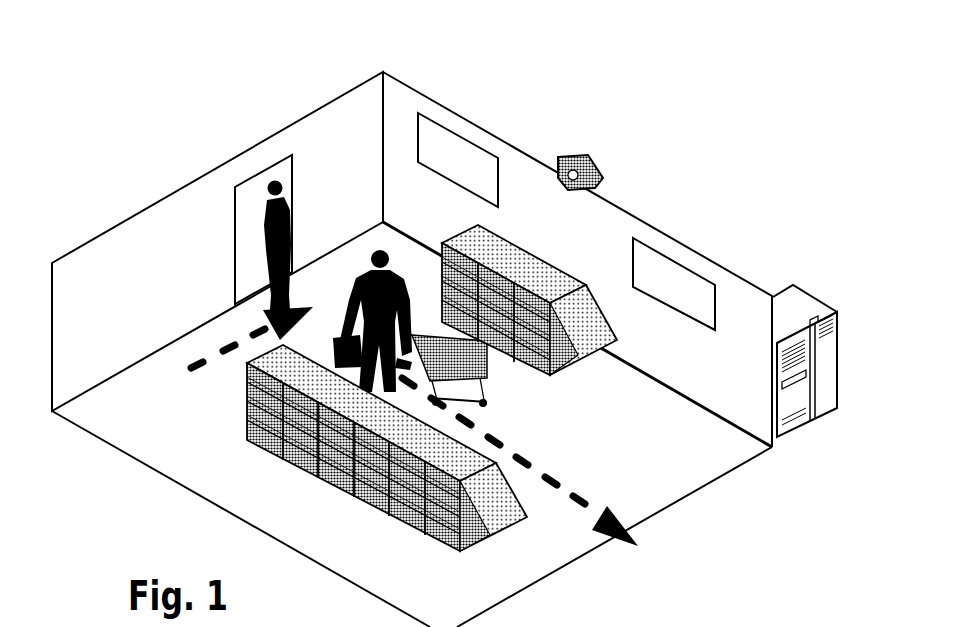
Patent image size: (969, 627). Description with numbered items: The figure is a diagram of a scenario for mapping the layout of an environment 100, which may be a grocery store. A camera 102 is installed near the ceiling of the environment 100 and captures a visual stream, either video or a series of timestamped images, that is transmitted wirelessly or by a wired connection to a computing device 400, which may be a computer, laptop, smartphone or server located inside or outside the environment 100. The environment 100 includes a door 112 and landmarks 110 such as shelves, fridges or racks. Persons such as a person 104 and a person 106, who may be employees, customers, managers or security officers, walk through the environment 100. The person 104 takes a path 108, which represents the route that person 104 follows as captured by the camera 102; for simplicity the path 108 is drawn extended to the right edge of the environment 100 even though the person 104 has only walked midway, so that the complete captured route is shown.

The environment 100 is at (432, 33).
The camera 102 is at (612, 130).
The person 104 is at (394, 262).
The person 106 is at (288, 198).
The path 108 is at (612, 543).
The landmarks 110 is at (364, 496).
The door 112 is at (243, 183).
The computing device 400 is at (808, 333).